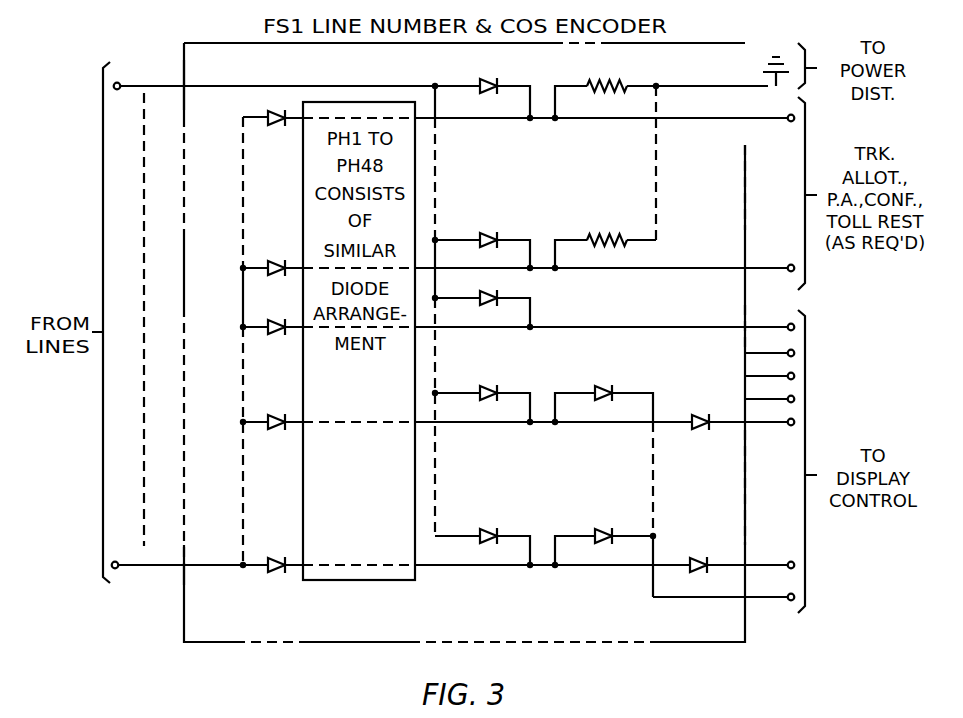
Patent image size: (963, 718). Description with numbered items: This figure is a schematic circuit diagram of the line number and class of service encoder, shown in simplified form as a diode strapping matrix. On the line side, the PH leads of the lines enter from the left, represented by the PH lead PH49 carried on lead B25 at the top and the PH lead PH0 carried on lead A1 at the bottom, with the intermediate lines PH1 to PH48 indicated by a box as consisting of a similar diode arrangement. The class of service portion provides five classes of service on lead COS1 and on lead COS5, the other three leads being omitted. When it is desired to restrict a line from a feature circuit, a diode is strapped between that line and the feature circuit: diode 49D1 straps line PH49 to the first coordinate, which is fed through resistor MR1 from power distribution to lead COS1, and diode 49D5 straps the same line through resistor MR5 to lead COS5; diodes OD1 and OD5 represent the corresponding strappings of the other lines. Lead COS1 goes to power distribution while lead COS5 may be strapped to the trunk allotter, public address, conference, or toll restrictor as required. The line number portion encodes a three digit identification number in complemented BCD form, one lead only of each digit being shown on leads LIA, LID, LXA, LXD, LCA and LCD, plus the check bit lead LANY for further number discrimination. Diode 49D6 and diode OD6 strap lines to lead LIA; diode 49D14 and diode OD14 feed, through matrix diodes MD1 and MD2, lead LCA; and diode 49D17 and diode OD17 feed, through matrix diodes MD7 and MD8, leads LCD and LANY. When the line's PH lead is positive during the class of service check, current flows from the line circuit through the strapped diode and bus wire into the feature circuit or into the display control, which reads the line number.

The PH lead of line 49 PH49 is at (322, 91).
The lead B25 is at (208, 85).
The diode 49D1 is at (464, 75).
The resistor MR1 is at (661, 87).
The diode OD1 is at (515, 107).
The lead COS-1 COS1 is at (770, 108).
The diode 49D5 is at (481, 239).
The resistor MR5 is at (605, 239).
The diode OD5 is at (514, 257).
The lead COS-5 COS5 is at (775, 258).
The diode 49D6 is at (481, 299).
The diode OD6 is at (514, 316).
The lead LIA is at (771, 317).
The lead LID is at (769, 343).
The lead LXA is at (769, 366).
The lead LXD is at (769, 389).
The diode 49D14 is at (481, 392).
The diode MD1 is at (604, 392).
The diode MD2 is at (700, 412).
The diode OD14 is at (514, 411).
The lead LCA is at (771, 412).
The diode 49D17 is at (482, 536).
The diode MD7 is at (605, 552).
The diode MD8 is at (694, 556).
The diode OD17 is at (514, 554).
The PH lead of line 0 PH0 is at (177, 554).
The lead A1 is at (196, 563).
The lead LCD is at (771, 557).
The lead LANY is at (726, 588).